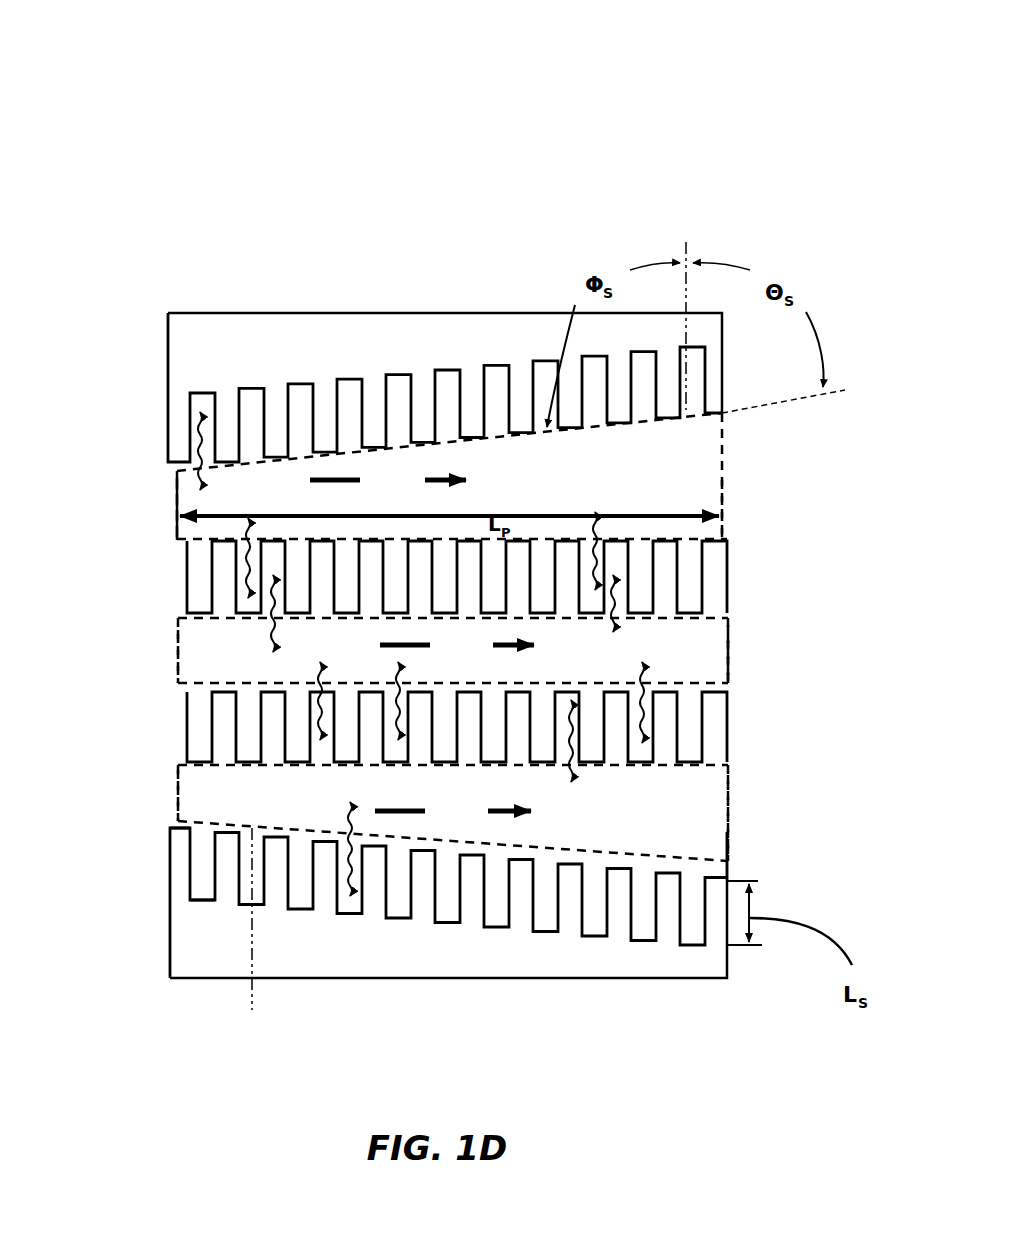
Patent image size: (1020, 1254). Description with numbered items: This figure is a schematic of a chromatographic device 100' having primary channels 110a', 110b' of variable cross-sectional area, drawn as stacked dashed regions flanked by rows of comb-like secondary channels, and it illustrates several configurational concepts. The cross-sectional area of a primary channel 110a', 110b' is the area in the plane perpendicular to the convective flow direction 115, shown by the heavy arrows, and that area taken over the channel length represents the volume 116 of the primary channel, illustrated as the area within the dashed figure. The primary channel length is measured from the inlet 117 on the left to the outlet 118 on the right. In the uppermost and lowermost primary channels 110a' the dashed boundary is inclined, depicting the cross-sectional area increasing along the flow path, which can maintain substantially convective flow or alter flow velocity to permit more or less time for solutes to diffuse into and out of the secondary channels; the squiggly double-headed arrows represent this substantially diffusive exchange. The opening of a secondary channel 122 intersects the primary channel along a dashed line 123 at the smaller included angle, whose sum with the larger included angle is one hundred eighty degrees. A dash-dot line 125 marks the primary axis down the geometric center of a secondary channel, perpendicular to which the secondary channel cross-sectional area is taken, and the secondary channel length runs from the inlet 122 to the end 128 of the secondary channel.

The chromatographic device 100' is at (414, 493).
The primary channel 110a' is at (452, 637).
The primary channel 110b' is at (453, 650).
The convective flow direction 115 is at (422, 645).
The volume 116 is at (175, 482).
The inlet 117 is at (150, 503).
The outlet 118 is at (748, 517).
The opening of a secondary channel 122 is at (194, 818).
The intersection line 123 is at (806, 394).
The primary axis of a secondary channel 125 is at (470, 631).
The end of the secondary channel 128 is at (196, 908).